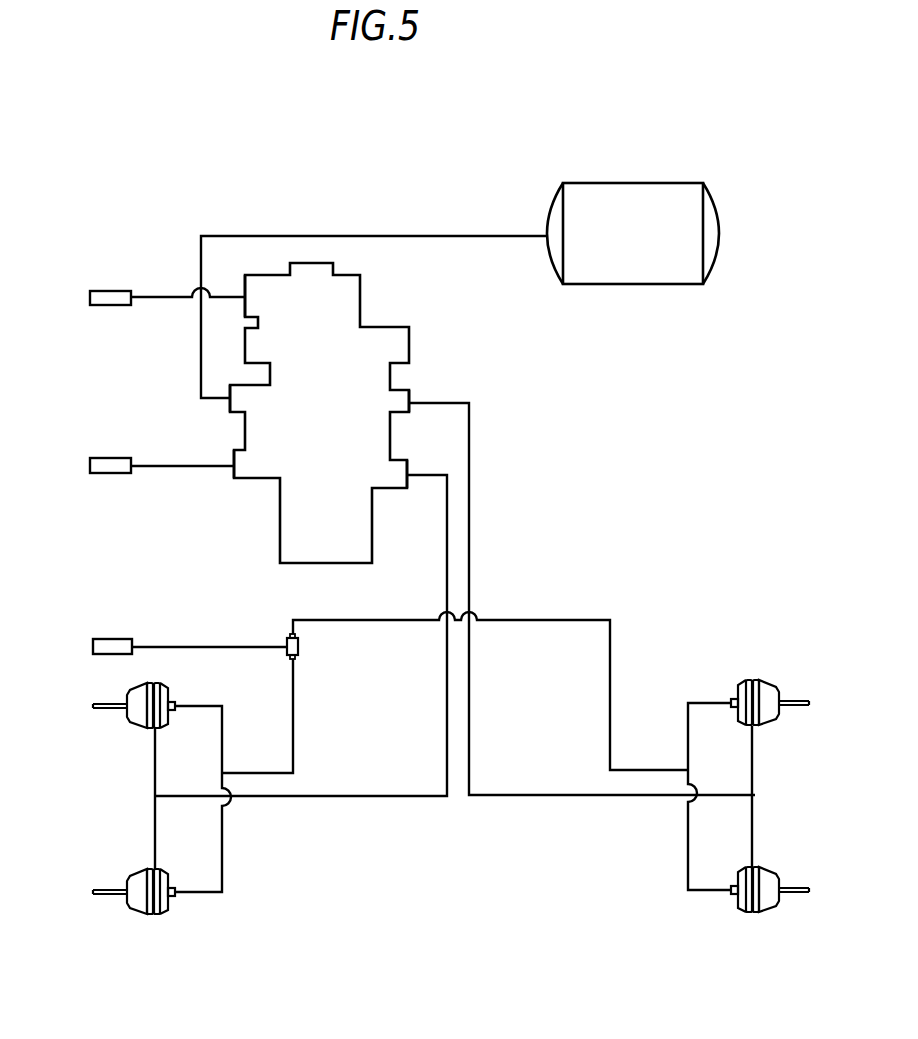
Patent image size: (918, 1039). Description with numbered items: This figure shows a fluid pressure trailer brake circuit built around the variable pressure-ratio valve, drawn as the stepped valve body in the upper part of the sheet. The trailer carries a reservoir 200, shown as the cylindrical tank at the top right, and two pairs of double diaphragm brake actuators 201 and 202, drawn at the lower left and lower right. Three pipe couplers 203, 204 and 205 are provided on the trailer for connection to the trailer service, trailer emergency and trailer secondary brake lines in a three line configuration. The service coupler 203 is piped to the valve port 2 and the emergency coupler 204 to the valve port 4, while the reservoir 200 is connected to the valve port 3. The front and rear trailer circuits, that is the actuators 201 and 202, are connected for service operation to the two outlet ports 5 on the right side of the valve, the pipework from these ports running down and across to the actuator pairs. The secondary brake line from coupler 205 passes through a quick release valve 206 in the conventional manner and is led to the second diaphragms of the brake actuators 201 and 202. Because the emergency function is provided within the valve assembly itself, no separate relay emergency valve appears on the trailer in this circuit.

The port 2 is at (243, 293).
The port 3 is at (228, 397).
The port 4 is at (232, 470).
The ports 5 is at (412, 403).
The reservoir 200 is at (627, 207).
The double diaphragm brake actuators 201 is at (205, 779).
The double diaphragm brake actuators 202 is at (745, 777).
The pipe coupler 203 is at (125, 279).
The pipe coupler 204 is at (125, 449).
The pipe coupler 205 is at (125, 628).
The quick release valve 206 is at (287, 640).